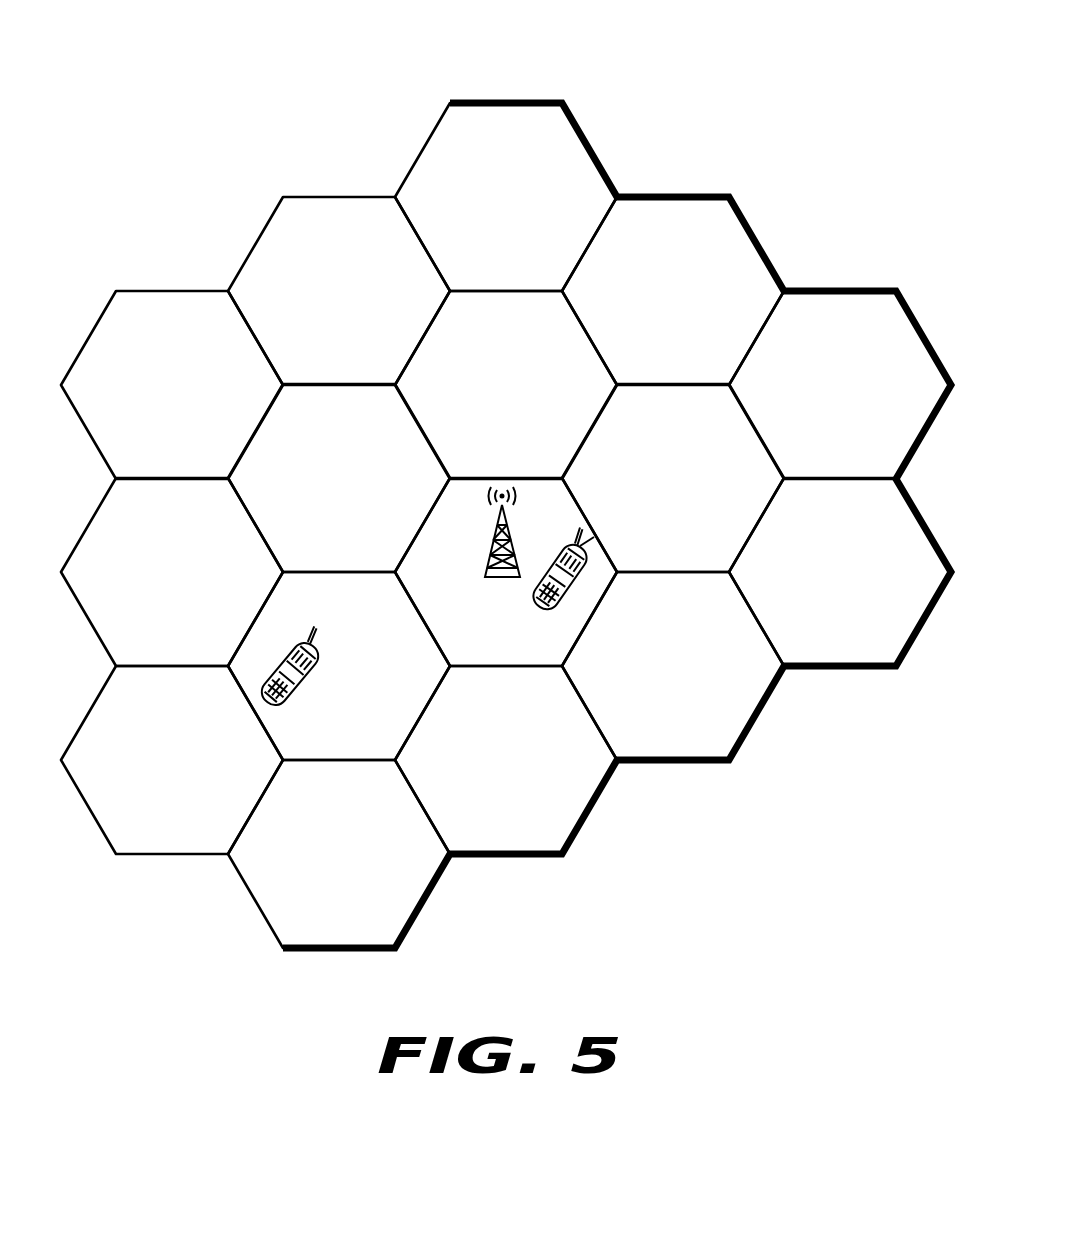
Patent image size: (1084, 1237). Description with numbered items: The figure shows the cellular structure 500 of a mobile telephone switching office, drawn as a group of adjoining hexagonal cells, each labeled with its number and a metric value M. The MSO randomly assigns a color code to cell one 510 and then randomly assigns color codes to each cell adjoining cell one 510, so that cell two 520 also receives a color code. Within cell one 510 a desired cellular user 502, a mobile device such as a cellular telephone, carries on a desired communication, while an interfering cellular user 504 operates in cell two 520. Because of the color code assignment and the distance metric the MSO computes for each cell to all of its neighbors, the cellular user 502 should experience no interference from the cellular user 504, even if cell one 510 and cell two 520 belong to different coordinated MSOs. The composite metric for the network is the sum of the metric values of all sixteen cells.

The cellular communication system 500 is at (757, 62).
The cellular user 502 is at (572, 578).
The cellular user 504 is at (277, 664).
The cell one 510 is at (577, 528).
The cell two 520 is at (366, 627).